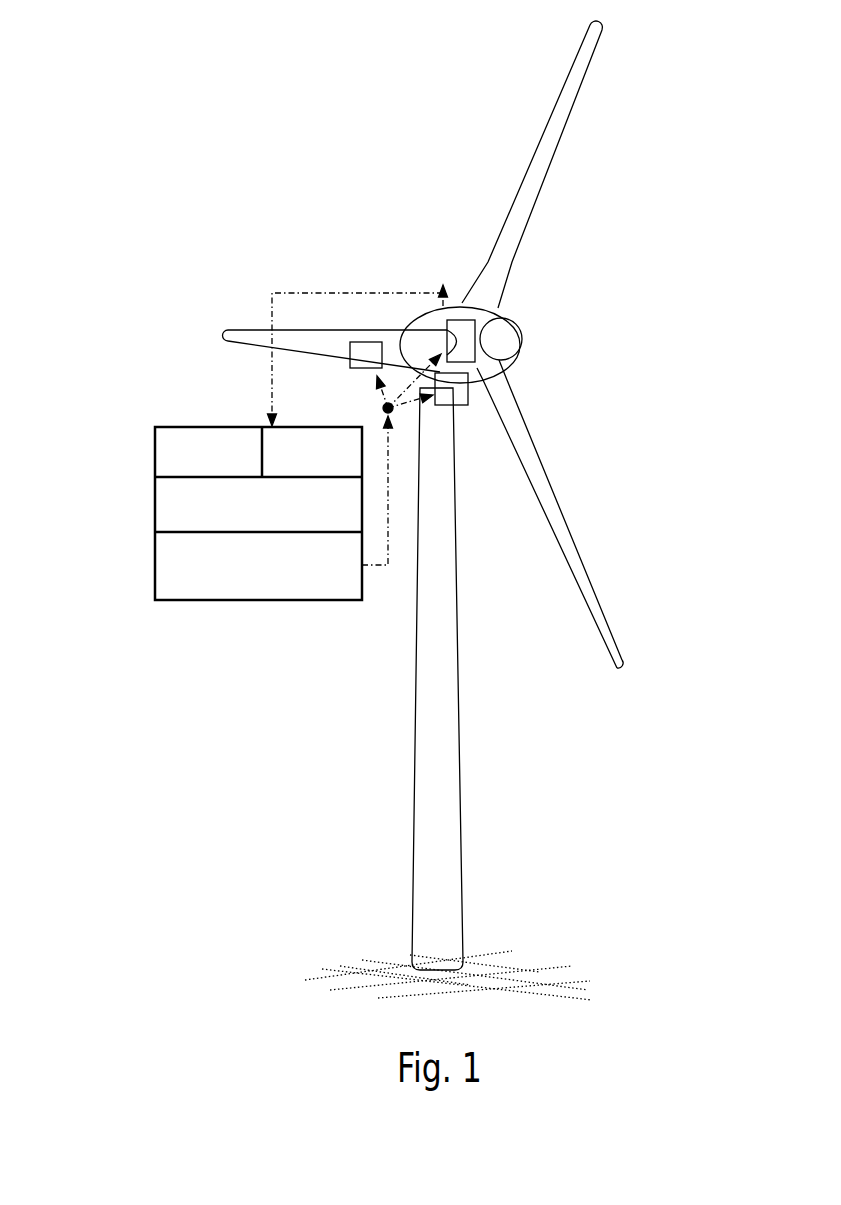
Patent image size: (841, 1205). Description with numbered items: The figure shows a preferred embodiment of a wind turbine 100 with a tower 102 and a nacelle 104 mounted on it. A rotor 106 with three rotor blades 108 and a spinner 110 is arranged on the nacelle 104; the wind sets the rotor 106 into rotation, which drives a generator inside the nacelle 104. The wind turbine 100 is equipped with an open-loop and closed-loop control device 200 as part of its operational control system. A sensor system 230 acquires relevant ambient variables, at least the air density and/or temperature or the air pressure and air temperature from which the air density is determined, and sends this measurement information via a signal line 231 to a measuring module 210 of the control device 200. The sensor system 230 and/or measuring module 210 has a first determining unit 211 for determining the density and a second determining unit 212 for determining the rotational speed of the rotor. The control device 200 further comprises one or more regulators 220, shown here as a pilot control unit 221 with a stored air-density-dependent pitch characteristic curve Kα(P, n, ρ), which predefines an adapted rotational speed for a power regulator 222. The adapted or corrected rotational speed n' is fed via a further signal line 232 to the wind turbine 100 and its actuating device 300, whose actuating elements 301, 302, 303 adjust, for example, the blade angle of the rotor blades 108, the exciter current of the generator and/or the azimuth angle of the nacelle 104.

The wind turbine 100 is at (421, 147).
The tower 102 is at (458, 757).
The nacelle 104 is at (423, 316).
The rotor 106 is at (640, 250).
The rotor blade 108 is at (541, 166).
The spinner 110 is at (520, 340).
The open-loop and closed-loop control device 200 is at (362, 403).
The measuring module 210 is at (210, 527).
The first determining unit 211 is at (176, 430).
The second determining unit 212 is at (318, 430).
The regulator 220 is at (148, 602).
The pilot control unit 221 is at (157, 505).
The power regulator 222 is at (248, 592).
The sensor system 230 is at (446, 282).
The signal line 231 is at (270, 380).
The further signal line 232 is at (392, 520).
The actuating device 300 is at (415, 400).
The actuating element 301 is at (356, 341).
The actuating element 302 is at (468, 320).
The actuating element 303 is at (470, 395).